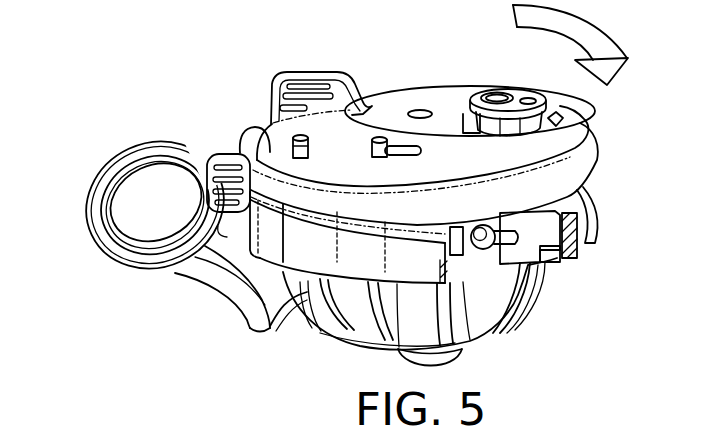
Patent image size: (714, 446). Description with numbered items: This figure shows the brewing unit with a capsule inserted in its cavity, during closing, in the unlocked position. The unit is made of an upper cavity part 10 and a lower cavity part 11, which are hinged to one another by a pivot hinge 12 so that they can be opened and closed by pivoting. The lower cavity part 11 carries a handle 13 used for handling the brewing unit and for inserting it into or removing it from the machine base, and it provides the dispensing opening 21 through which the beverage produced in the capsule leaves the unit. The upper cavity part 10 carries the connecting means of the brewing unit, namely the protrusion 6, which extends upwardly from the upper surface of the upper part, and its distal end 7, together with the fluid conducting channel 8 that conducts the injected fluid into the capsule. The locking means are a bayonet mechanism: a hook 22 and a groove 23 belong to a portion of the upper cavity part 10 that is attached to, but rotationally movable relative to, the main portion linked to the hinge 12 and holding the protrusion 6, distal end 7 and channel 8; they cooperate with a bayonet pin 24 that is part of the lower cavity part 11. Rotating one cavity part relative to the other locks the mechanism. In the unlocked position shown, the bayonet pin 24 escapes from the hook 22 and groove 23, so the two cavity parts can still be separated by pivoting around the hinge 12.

The protrusion 6 is at (553, 123).
The distal end 7 is at (475, 93).
The fluid conducting channel 8 is at (503, 94).
The upper cavity part 10 is at (523, 157).
The lower cavity part 11 is at (480, 326).
The pivot hinge 12 is at (240, 148).
The handle 13 is at (91, 205).
The dispensing opening 21 is at (397, 356).
The hook 22 is at (497, 237).
The groove 23 is at (587, 232).
The bayonet pin 24 is at (490, 247).